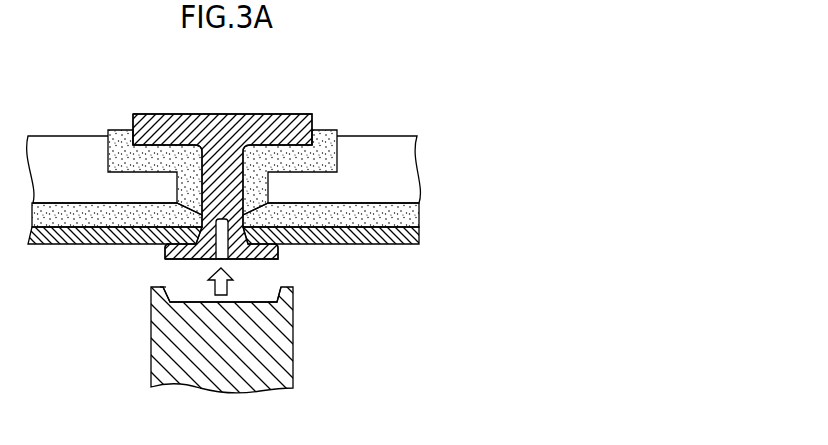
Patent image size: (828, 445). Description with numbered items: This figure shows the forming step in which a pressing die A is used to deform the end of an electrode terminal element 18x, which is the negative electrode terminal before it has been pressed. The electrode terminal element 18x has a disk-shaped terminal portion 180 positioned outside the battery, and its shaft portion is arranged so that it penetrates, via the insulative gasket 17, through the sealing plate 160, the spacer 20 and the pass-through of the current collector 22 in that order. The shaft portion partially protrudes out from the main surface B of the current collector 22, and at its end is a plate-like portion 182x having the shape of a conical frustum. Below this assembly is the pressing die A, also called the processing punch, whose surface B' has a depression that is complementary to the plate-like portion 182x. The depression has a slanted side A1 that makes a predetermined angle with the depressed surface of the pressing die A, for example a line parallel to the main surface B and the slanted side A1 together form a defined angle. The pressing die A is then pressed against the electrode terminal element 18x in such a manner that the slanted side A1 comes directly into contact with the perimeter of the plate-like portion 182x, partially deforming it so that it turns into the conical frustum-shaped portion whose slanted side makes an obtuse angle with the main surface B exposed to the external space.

The terminal portion 180 is at (198, 113).
The electrode terminal element 18x is at (238, 114).
The insulative gasket 17 is at (327, 130).
The sealing plate 160 is at (395, 143).
The spacer 20 is at (420, 217).
The current collector 22 is at (420, 233).
The main surface B is at (293, 248).
The plate-like portion 182x is at (277, 248).
The pressing die A is at (295, 352).
The slanted side A1 is at (278, 302).
The surface B' is at (134, 278).